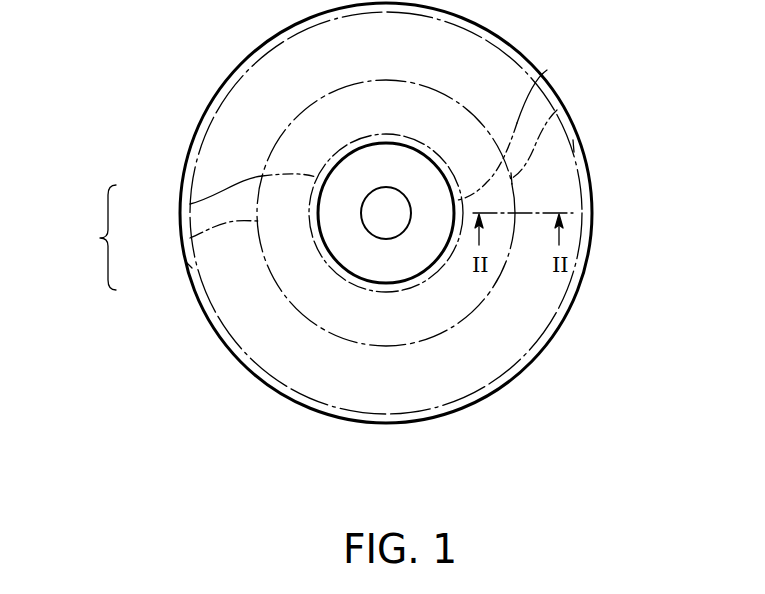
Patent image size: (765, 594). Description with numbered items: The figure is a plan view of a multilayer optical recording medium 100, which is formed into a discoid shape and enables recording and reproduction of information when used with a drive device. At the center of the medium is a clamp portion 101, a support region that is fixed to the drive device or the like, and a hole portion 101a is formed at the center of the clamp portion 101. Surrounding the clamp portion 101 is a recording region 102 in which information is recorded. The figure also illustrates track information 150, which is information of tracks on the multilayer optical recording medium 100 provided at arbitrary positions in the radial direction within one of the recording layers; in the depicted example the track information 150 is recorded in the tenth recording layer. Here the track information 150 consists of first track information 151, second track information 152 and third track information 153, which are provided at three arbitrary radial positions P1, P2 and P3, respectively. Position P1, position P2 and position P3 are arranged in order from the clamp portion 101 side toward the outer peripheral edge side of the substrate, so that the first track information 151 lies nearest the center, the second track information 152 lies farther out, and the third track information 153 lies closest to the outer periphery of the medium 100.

The multilayer optical recording medium 100 is at (360, 431).
The clamp portion 101 is at (412, 263).
The hole portion 101a is at (372, 227).
The recording region 102 is at (309, 23).
The track information 150 is at (191, 232).
The first track information 151 is at (190, 204).
The second track information 152 is at (190, 238).
The third track information 153 is at (190, 265).
The position P1 is at (547, 70).
The position P2 is at (557, 110).
The position P3 is at (574, 146).